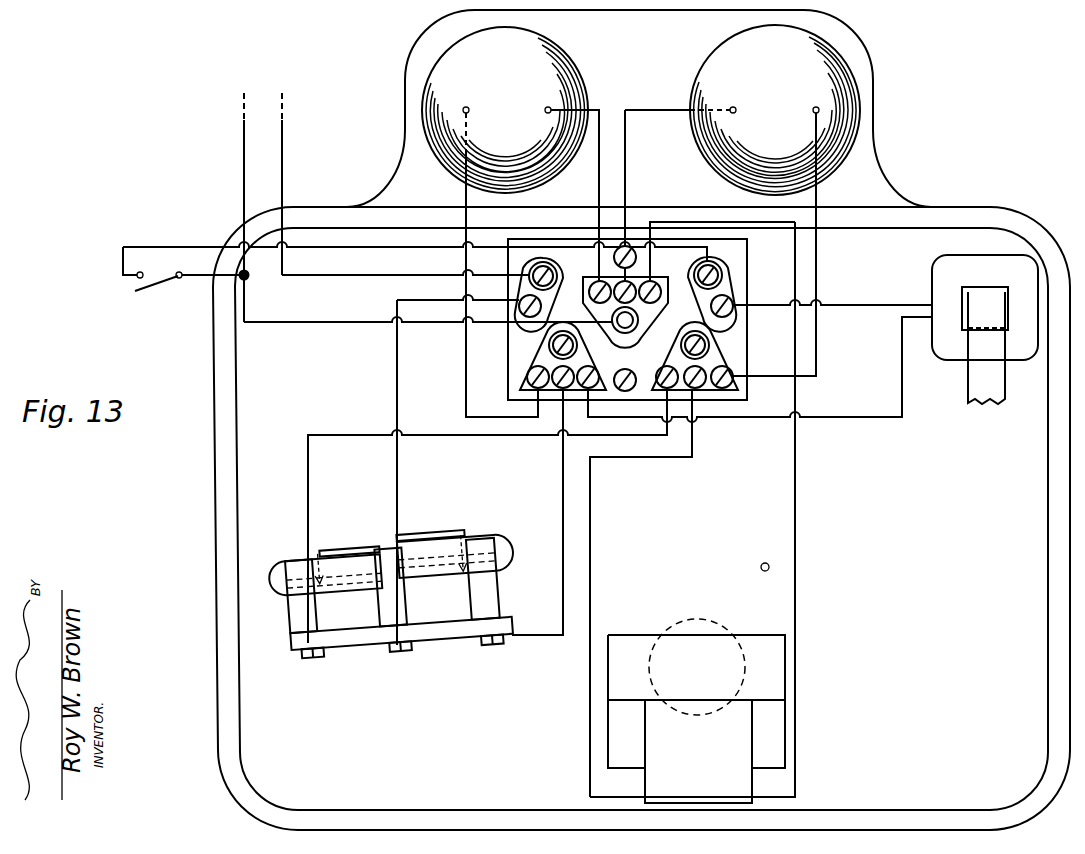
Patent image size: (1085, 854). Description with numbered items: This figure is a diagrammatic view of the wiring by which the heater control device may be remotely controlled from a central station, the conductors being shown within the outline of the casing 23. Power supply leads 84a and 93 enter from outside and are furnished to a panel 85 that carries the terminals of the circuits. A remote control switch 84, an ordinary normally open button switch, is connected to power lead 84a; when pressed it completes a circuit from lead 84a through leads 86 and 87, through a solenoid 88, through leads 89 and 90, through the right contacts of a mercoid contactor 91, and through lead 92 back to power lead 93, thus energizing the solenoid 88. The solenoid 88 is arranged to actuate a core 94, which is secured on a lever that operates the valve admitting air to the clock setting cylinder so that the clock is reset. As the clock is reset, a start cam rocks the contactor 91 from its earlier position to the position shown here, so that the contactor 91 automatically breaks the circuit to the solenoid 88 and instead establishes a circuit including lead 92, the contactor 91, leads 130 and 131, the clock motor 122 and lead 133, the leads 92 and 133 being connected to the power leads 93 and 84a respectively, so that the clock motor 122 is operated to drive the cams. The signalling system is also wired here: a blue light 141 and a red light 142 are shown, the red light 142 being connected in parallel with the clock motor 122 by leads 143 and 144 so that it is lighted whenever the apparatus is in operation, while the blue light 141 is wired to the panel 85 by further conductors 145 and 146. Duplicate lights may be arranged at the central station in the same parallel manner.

The casing 23 is at (216, 412).
The remote control switch 84 is at (123, 270).
The power supply lead 84a is at (240, 145).
The panel 85 is at (520, 350).
The lead 86 is at (415, 256).
The lead 87 is at (895, 285).
The solenoid 88 is at (958, 360).
The lead 89 is at (866, 417).
The lead 90 is at (563, 487).
The mercoid contactor 91 is at (452, 610).
The lead 92 is at (397, 383).
The power supply lead 93 is at (331, 276).
The core 94 is at (990, 296).
The clock motor 122 is at (678, 640).
The lead 130 is at (308, 465).
The lead 131 is at (665, 458).
The lead 133 is at (796, 478).
The blue light 141 is at (426, 127).
The red light 142 is at (862, 128).
The lead 143 is at (626, 143).
The lead 144 is at (820, 250).
The conductor 145 is at (462, 290).
The conductor 146 is at (599, 192).